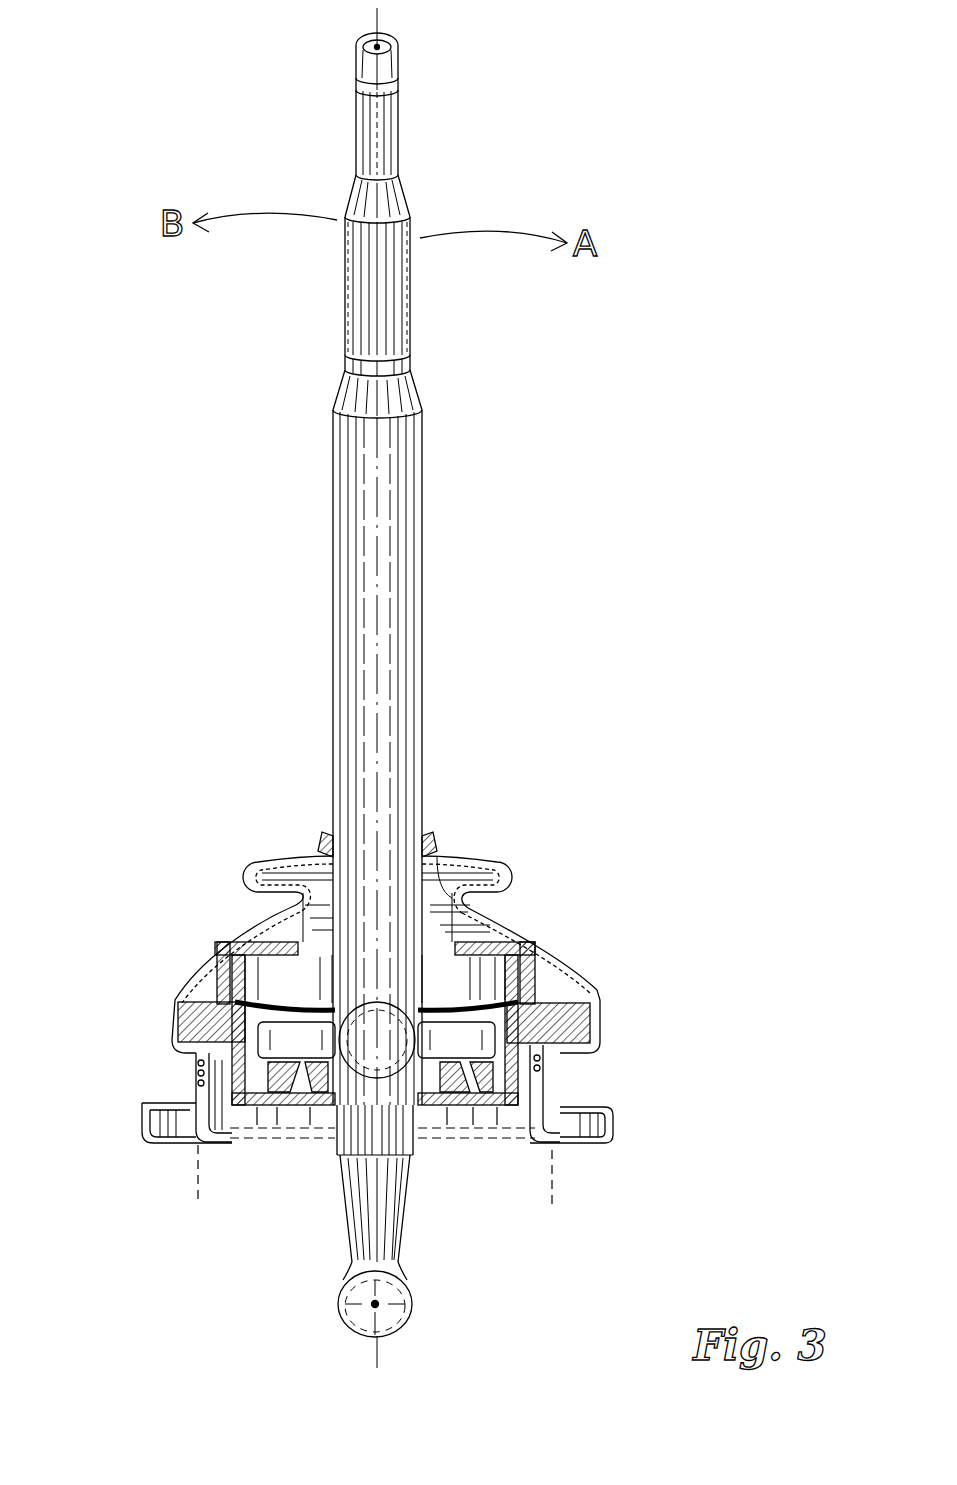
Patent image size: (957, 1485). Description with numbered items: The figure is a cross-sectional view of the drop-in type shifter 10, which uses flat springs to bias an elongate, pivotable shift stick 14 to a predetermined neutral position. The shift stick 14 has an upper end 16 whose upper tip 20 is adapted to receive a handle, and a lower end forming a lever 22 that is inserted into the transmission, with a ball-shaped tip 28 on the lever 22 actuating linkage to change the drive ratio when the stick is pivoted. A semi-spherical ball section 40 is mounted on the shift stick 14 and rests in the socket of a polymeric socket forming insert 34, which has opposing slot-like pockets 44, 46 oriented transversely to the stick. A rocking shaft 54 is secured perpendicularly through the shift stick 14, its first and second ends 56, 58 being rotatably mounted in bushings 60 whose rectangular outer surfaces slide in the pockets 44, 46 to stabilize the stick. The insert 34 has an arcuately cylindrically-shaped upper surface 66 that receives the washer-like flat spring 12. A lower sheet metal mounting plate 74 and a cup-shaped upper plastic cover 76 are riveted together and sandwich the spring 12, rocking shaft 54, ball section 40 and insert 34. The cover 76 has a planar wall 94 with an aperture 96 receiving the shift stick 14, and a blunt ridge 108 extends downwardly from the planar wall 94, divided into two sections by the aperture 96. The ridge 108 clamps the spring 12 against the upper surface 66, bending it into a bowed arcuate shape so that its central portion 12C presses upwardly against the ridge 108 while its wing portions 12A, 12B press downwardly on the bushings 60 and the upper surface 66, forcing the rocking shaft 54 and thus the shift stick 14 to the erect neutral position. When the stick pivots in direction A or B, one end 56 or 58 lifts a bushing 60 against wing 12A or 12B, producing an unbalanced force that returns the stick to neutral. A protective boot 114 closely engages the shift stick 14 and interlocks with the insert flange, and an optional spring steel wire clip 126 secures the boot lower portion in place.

The drop-in type shifter 10 is at (518, 62).
The upper tip 20 is at (385, 22).
The shift stick 14 is at (345, 280).
The upper end 16 is at (426, 472).
The protective boot 114 is at (314, 848).
The flat spring 12 is at (243, 873).
The wing portion 12A is at (262, 863).
The wing portion 12B is at (530, 943).
The central portion 12C is at (437, 843).
The planar wall 94 is at (377, 877).
The aperture 96 is at (497, 862).
The ridge 108 is at (352, 1000).
The upper plastic cover 76 is at (197, 960).
The spring steel wire clip 126 is at (193, 1072).
The upper surface 66 is at (170, 1015).
The socket forming insert 34 is at (602, 1033).
The rocking shaft 54 is at (376, 985).
The first end 56 is at (285, 1035).
The second end 58 is at (478, 1068).
The bushing 60 is at (252, 1083).
The ball section 40 is at (377, 1040).
The lower sheet metal mounting plate 74 is at (150, 1140).
The slot-like pocket 46 is at (567, 1133).
The slot-like pocket 44 is at (212, 1148).
The lever 22 is at (350, 1256).
The ball-shaped tip 28 is at (410, 1310).